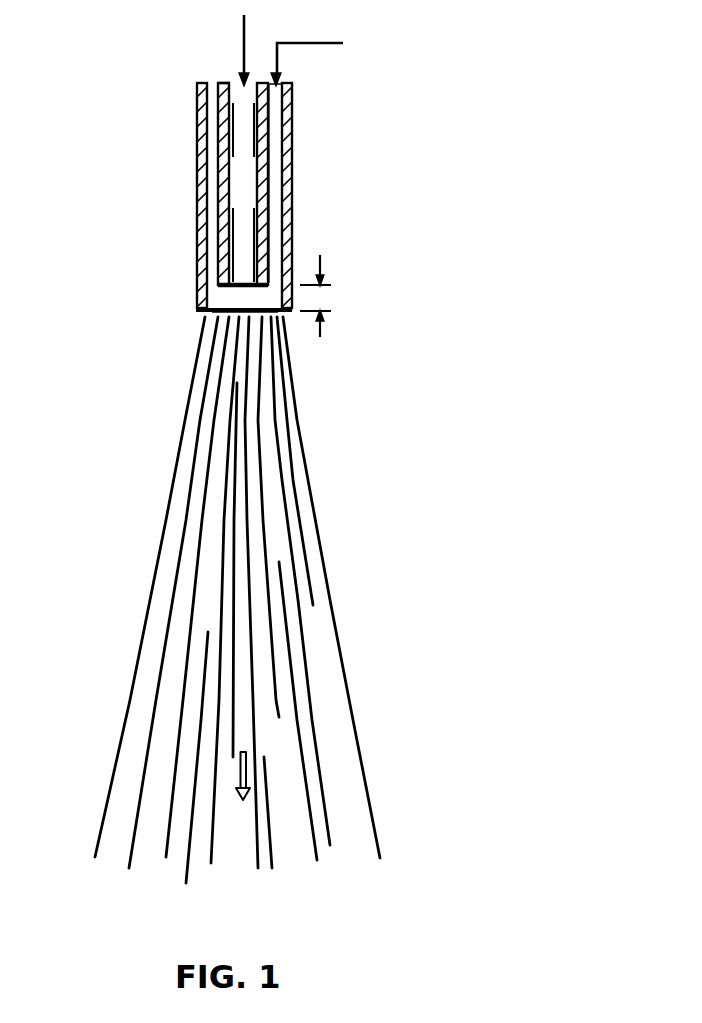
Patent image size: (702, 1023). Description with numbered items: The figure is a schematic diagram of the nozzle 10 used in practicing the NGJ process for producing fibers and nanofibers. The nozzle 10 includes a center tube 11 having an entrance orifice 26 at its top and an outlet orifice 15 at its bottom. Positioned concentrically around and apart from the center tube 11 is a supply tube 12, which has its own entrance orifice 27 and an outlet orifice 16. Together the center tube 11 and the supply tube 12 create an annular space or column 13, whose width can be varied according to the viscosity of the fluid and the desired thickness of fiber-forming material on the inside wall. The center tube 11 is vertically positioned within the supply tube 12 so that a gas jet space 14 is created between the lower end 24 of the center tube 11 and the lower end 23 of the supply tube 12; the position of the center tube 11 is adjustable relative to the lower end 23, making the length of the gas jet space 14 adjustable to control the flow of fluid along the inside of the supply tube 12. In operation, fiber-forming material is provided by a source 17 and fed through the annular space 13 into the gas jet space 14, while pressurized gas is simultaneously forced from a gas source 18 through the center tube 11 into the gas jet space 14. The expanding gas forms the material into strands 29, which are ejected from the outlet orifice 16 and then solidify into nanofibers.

The nozzle 10 is at (148, 143).
The center tube 11 is at (265, 158).
The supply tube 12 is at (289, 197).
The annular space or column 13 is at (272, 233).
The gas jet space 14 is at (322, 264).
The outlet orifice 15 is at (232, 280).
The outlet orifice 16 is at (220, 308).
The source 17 is at (327, 43).
The gas source 18 is at (244, 33).
The lower end 23 is at (283, 313).
The lower end 24 is at (227, 287).
The entrance orifice 26 is at (223, 83).
The entrance orifice 27 is at (282, 91).
The strands 29 is at (188, 500).